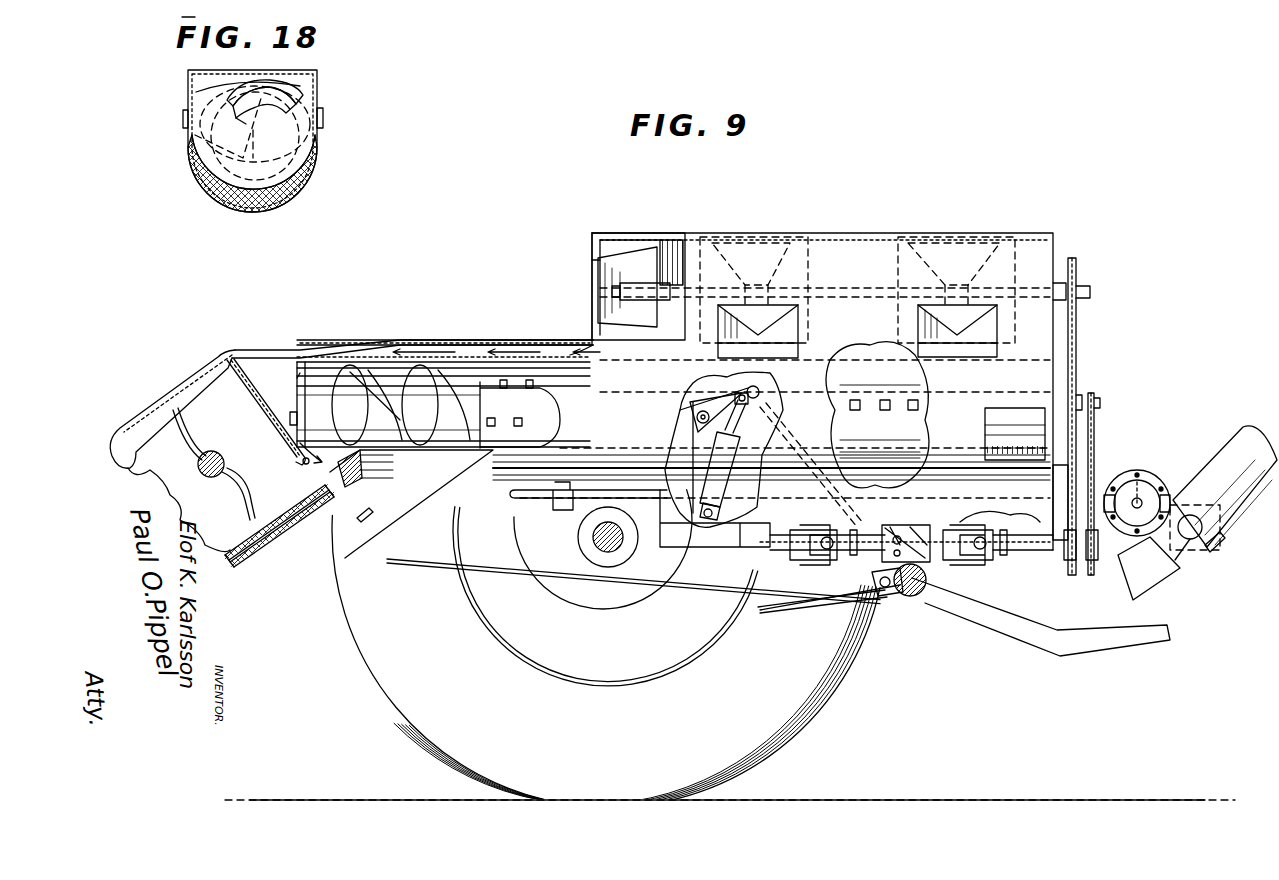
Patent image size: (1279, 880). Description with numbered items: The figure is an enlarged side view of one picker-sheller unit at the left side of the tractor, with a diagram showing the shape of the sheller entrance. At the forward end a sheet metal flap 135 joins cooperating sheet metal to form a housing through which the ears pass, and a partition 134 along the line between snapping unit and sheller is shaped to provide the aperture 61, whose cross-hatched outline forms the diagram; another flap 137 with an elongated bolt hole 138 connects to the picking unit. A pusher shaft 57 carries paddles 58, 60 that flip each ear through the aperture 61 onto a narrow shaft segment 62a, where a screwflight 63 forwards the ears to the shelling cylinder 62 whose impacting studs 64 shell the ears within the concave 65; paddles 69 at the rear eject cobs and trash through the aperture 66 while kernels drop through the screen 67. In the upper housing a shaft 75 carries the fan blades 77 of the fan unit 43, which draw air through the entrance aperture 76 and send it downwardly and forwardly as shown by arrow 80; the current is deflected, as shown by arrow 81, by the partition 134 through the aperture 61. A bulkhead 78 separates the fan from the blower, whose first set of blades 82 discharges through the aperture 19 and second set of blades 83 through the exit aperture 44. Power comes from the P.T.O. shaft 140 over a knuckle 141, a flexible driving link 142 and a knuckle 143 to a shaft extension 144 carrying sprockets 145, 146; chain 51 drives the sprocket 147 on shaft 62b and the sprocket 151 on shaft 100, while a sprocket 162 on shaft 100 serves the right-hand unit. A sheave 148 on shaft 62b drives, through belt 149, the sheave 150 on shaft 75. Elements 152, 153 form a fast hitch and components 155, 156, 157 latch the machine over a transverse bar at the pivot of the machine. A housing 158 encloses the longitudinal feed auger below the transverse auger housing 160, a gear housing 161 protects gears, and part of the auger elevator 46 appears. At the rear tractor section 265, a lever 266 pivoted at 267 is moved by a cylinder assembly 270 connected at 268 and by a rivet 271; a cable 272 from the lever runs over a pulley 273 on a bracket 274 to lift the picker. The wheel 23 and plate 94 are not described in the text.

In FIG. 9, the discharge aperture 19 is at (758, 300).
In FIG. 9, the wheel 23 is at (362, 680).
In FIG. 9, the fan unit 43 is at (620, 205).
In FIG. 9, the exit aperture 44 is at (957, 300).
In FIG. 9, the auger elevator 46 is at (1245, 418).
In FIG. 9, the chain 51 is at (1094, 455).
In FIG. 9, the shaft 57 is at (217, 451).
In FIG. 9, the paddle 58 is at (182, 438).
In FIG. 9, the paddle 60 is at (230, 478).
In FIG. 18, the aperture 61 is at (262, 200).
In FIG. 9, the aperture 61 is at (316, 479).
In FIG. 9, the shelling cylinder 62 is at (490, 385).
In FIG. 18, the shaft segment 62a is at (192, 148).
In FIG. 9, the shaft segment 62a is at (292, 370).
In FIG. 9, the shaft 62b is at (1100, 405).
In FIG. 18, the screwflight 63 is at (285, 110).
In FIG. 9, the screwflight 63 is at (355, 370).
In FIG. 9, the impacting studs 64 is at (530, 380).
In FIG. 18, the concave 65 is at (312, 92).
In FIG. 9, the concave 65 is at (380, 360).
In FIG. 9, the aperture 66 is at (985, 415).
In FIG. 9, the screen 67 is at (920, 450).
In FIG. 9, the paddles 69 is at (985, 386).
In FIG. 9, the shaft 75 is at (850, 290).
In FIG. 9, the entrance aperture 76 is at (592, 265).
In FIG. 9, the fan blades 77 is at (632, 245).
In FIG. 9, the bulkhead 78 is at (680, 255).
In FIG. 9, the arrow 80 is at (593, 345).
In FIG. 9, the arrow 81 is at (300, 340).
In FIG. 9, the first set of blades 82 is at (752, 240).
In FIG. 9, the second set of blades 83 is at (985, 240).
In FIG. 9, the plate 94 is at (370, 485).
In FIG. 9, the shaft 100 is at (533, 497).
In FIG. 18, the partition 134 is at (207, 92).
In FIG. 9, the partition 134 is at (248, 398).
In FIG. 9, the sheet metal flap 135 is at (178, 395).
In FIG. 9, the flap 137 is at (333, 560).
In FIG. 9, the bolt hole 138 is at (374, 514).
In FIG. 9, the P.T.O. shaft 140 is at (785, 560).
In FIG. 9, the knuckle 141 is at (821, 588).
In FIG. 9, the flexible driving link 142 is at (858, 552).
In FIG. 9, the knuckle 143 is at (985, 515).
In FIG. 9, the shaft extension 144 is at (1080, 575).
In FIG. 9, the sprocket 145 is at (1066, 575).
In FIG. 9, the sprocket 146 is at (1092, 575).
In FIG. 9, the sprocket 147 is at (1095, 392).
In FIG. 9, the sheave 148 is at (1085, 370).
In FIG. 9, the belt 149 is at (1078, 345).
In FIG. 9, the sheave 150 is at (1080, 262).
In FIG. 9, the sprocket 151 is at (1095, 470).
In FIG. 9, the hitch element 152 is at (790, 610).
In FIG. 9, the hitch assembly 153 is at (1082, 648).
In FIG. 9, the latching component 155 is at (912, 527).
In FIG. 9, the latching component 156 is at (970, 565).
In FIG. 9, the latching component 157 is at (1020, 560).
In FIG. 9, the housing 158 is at (1160, 582).
In FIG. 9, the housing 160 is at (1165, 485).
In FIG. 9, the gear housing 161 is at (1212, 552).
In FIG. 9, the sprocket 162 is at (1080, 450).
In FIG. 9, the tractor section 265 is at (614, 620).
In FIG. 9, the lever 266 is at (697, 375).
In FIG. 9, the pivotal connection 267 is at (762, 420).
In FIG. 9, the pivotal connection 268 is at (690, 405).
In FIG. 9, the cylinder assembly 270 is at (690, 440).
In FIG. 9, the rivet 271 is at (712, 548).
In FIG. 9, the cable 272 is at (222, 565).
In FIG. 9, the pulley 273 is at (900, 596).
In FIG. 9, the bracket 274 is at (888, 600).